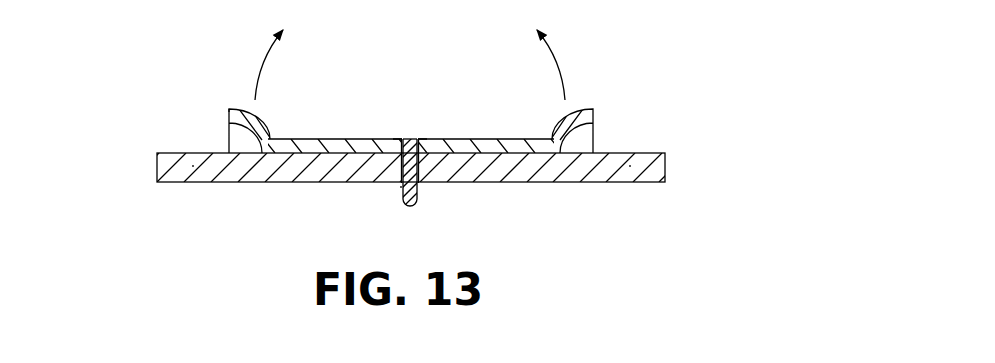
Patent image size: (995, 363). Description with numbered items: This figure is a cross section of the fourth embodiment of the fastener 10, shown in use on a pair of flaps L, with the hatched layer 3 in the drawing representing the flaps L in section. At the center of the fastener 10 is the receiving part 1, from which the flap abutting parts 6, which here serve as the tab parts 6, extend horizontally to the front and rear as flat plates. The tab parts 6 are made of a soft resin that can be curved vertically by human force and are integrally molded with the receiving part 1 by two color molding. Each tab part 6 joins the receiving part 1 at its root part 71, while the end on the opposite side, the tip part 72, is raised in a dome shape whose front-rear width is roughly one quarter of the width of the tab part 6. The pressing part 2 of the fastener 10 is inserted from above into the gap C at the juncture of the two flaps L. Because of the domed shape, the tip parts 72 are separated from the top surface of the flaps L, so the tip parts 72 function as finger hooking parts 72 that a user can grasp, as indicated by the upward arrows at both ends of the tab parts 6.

The receiving part 1 is at (410, 139).
The pressing part 2 is at (420, 200).
The plate member 3 is at (401, 168).
The flap abutting part 6 is at (332, 138).
The fastener 10 is at (216, 118).
The root part 71 is at (393, 145).
The tip part 72 is at (239, 118).
The gap C is at (399, 188).
The flap L is at (193, 165).